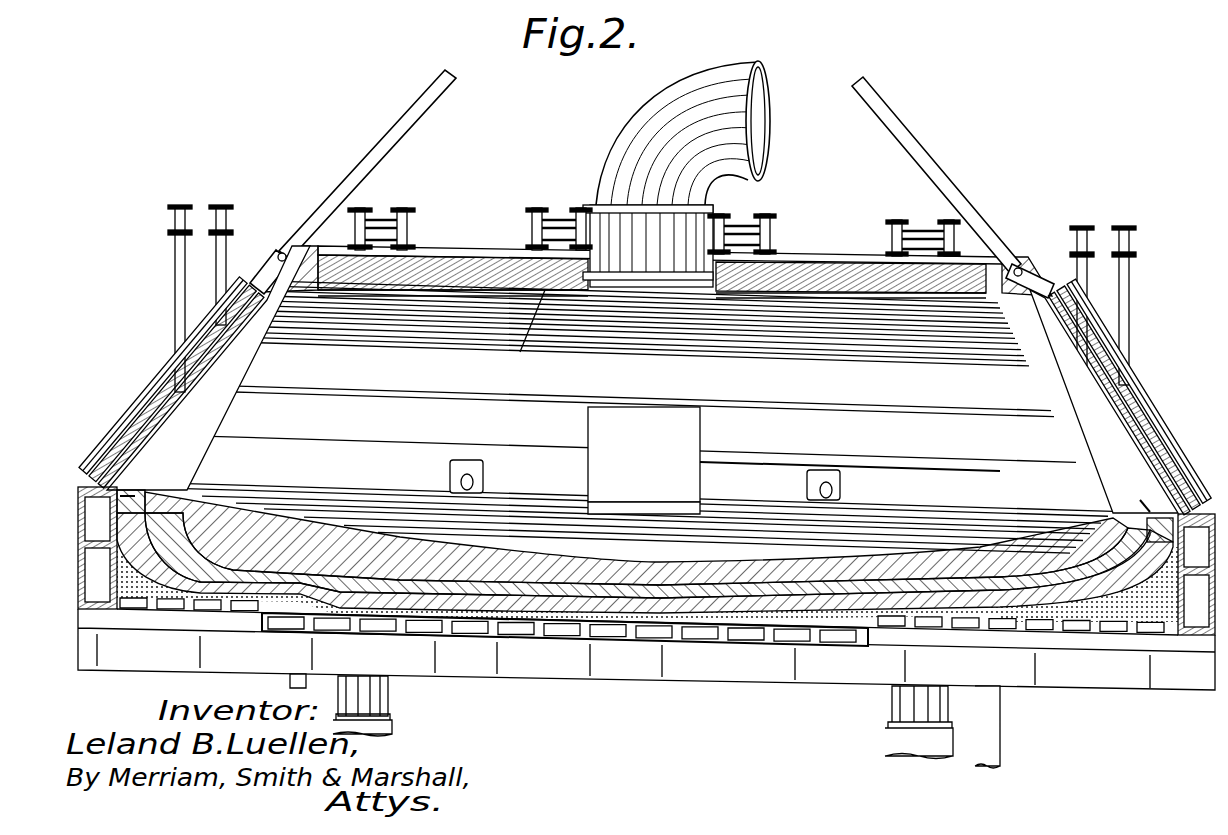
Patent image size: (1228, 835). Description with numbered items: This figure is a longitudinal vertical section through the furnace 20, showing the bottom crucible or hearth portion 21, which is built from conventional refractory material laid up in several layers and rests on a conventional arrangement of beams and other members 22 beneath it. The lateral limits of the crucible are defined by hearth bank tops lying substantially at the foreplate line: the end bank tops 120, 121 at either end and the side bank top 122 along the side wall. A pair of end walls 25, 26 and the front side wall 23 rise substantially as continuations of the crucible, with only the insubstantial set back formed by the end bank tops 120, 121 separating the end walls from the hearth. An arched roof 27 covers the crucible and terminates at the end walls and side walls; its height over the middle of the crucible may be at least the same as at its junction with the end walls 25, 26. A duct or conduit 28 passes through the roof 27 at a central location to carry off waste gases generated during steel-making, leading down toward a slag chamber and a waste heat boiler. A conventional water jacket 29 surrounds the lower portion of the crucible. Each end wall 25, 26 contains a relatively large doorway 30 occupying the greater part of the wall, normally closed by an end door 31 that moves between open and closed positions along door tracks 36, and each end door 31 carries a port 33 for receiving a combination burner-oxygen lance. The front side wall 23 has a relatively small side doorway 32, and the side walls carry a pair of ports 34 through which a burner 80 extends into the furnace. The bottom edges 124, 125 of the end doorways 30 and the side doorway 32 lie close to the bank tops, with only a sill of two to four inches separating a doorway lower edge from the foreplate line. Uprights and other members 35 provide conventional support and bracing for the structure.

The furnace 20 is at (999, 191).
The bottom crucible or hearth portion 21 is at (292, 528).
The beams and other members 22 is at (509, 667).
The front side wall 23 is at (798, 410).
The end wall 25 is at (1137, 474).
The end wall 26 is at (176, 420).
The arched roof 27 is at (532, 296).
The duct or conduit 28 is at (650, 125).
The water jacket 29 is at (82, 488).
The doorway 30 is at (160, 388).
The end door 31 is at (212, 345).
The side doorway 32 is at (696, 428).
The port 33 is at (203, 382).
The ports 34 is at (448, 478).
The uprights and other members 35 is at (168, 244).
The door tracks 36 is at (425, 90).
The burner 80 is at (476, 482).
The end bank top 120 is at (1150, 520).
The end bank top 121 is at (160, 500).
The side bank top 122 is at (738, 505).
The bottom edge 124 is at (122, 496).
The bottom edge 125 is at (614, 500).